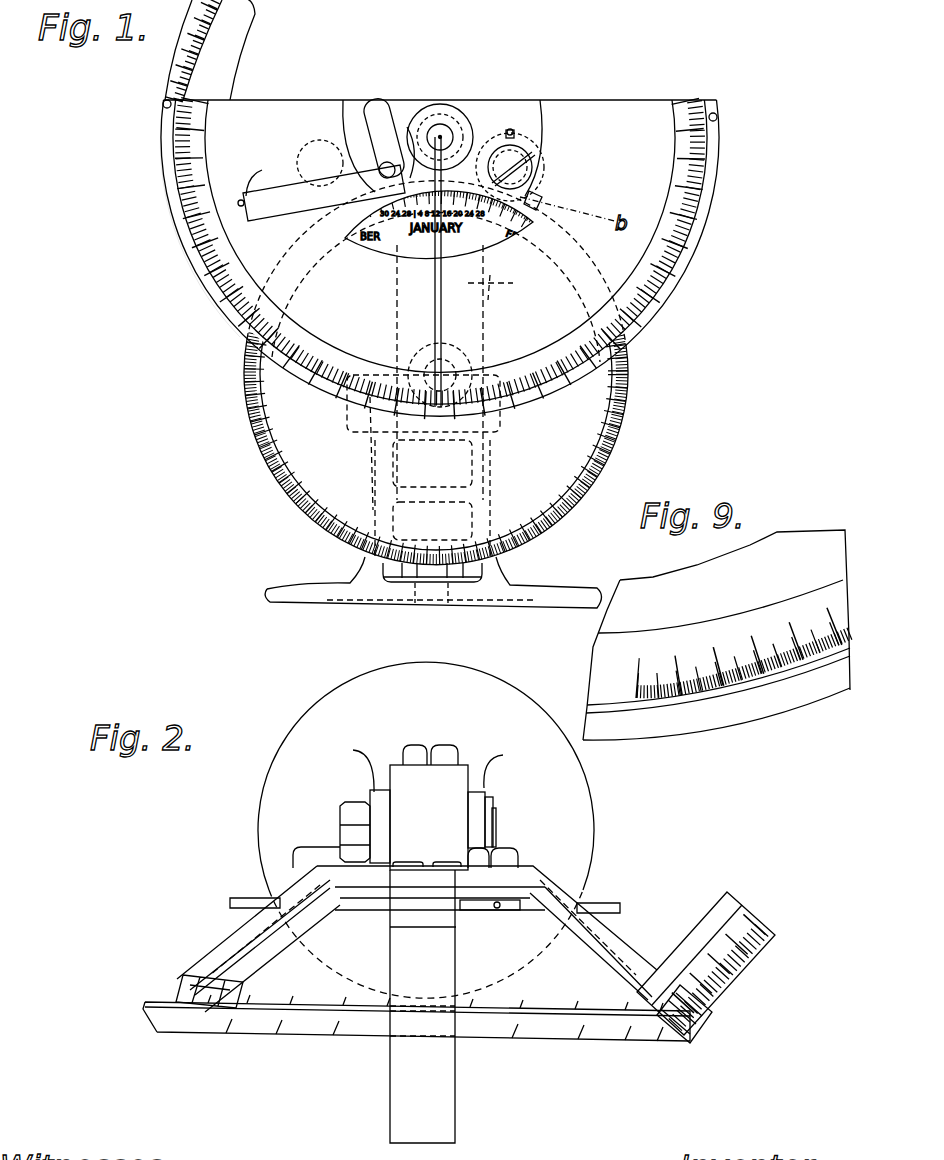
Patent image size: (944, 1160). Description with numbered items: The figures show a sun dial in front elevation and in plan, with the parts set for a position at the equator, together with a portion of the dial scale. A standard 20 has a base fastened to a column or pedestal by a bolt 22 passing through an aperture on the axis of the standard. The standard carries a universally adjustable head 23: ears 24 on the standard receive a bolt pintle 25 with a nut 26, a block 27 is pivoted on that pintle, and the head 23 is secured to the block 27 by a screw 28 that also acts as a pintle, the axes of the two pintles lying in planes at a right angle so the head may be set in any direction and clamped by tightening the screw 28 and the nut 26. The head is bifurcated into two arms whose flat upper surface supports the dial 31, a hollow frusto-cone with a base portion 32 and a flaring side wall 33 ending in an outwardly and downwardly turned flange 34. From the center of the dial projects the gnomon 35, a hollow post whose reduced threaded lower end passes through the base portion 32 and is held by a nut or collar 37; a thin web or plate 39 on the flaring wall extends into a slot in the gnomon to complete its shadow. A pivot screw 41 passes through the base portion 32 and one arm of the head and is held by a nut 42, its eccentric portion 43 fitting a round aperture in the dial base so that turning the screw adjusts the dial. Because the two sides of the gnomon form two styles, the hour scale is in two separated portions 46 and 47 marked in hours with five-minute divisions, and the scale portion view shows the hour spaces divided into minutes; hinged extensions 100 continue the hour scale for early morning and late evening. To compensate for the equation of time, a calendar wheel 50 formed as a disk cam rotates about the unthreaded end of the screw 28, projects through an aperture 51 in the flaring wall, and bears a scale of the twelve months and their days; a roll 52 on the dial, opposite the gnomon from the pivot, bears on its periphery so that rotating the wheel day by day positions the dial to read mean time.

In FIG. 1, the hinged extensions 100 is at (183, 24).
In FIG. 2, the hinged extensions 100 is at (730, 895).
In FIG. 1, the standard 20 is at (362, 558).
In FIG. 2, the standard 20 is at (486, 782).
In FIG. 1, the bolt 22 is at (418, 581).
In FIG. 1, the head 23 is at (466, 372).
In FIG. 1, the ears 24 is at (500, 430).
In FIG. 2, the ears 24 is at (380, 827).
In FIG. 1, the bolt pintle 25 is at (500, 418).
In FIG. 2, the bolt pintle 25 is at (497, 833).
In FIG. 2, the nut 26 is at (352, 808).
In FIG. 1, the block 27 is at (423, 467).
In FIG. 2, the screw 28 is at (422, 752).
In FIG. 1, the dial 31 is at (440, 241).
In FIG. 9, the dial 31 is at (715, 578).
In FIG. 2, the dial 31 is at (530, 995).
In FIG. 1, the base portion 32 is at (492, 108).
In FIG. 2, the base portion 32 is at (457, 912).
In FIG. 1, the flaring side wall 33 is at (439, 230).
In FIG. 1, the flange 34 is at (707, 203).
In FIG. 9, the flange 34 is at (777, 704).
In FIG. 2, the flange 34 is at (555, 1035).
In FIG. 1, the gnomon 35 is at (446, 102).
In FIG. 2, the gnomon 35 is at (402, 1080).
In FIG. 2, the nut or collar 37 is at (423, 878).
In FIG. 1, the web or plate 39 is at (438, 270).
In FIG. 1, the pivot screw 41 is at (513, 137).
In FIG. 2, the pivot screw 41 is at (515, 912).
In FIG. 1, the nut 42 is at (432, 375).
In FIG. 2, the nut 42 is at (520, 862).
In FIG. 1, the eccentric portion 43 is at (545, 152).
In FIG. 2, the eccentric portion 43 is at (520, 886).
In FIG. 1, the hour scale portion 46 is at (663, 276).
In FIG. 1, the hour scale portion 47 is at (242, 283).
In FIG. 1, the calendar wheel 50 is at (577, 417).
In FIG. 1, the aperture 51 is at (313, 150).
In FIG. 1, the roll 52 is at (402, 133).